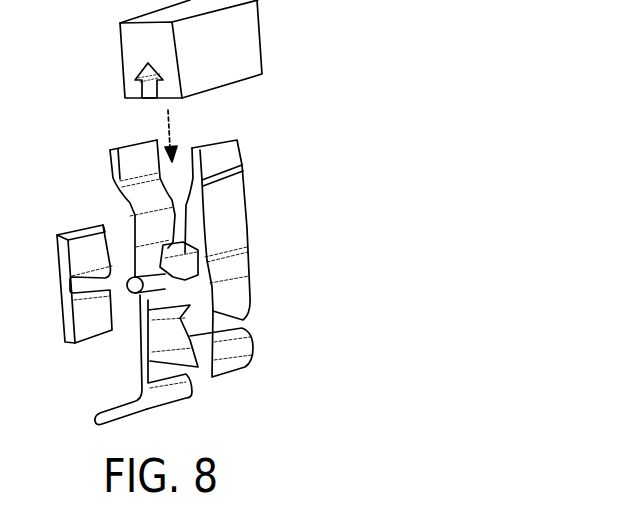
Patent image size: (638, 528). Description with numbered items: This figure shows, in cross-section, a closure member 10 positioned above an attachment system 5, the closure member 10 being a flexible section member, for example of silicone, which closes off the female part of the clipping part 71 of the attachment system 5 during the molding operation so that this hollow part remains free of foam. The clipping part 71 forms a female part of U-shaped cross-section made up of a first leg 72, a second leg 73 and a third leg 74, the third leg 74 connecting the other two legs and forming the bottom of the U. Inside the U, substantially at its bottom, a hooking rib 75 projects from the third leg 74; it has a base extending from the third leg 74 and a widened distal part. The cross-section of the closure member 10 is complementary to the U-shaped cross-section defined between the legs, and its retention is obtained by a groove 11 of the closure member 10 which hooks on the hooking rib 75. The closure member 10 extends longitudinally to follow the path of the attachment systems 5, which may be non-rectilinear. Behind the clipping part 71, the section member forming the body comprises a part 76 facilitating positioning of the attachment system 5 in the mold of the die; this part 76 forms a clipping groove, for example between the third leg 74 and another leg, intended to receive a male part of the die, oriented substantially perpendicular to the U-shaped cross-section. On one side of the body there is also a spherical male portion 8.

The attachment system 5 is at (268, 245).
The spherical male portion 8 is at (135, 292).
The closure member 10 is at (262, 33).
The groove 11 is at (143, 79).
The clipping part 71 is at (226, 134).
The first leg 72 is at (120, 183).
The second leg 73 is at (223, 208).
The third leg 74 is at (165, 301).
The hooking rib 75 is at (162, 265).
The part 76 is at (168, 347).